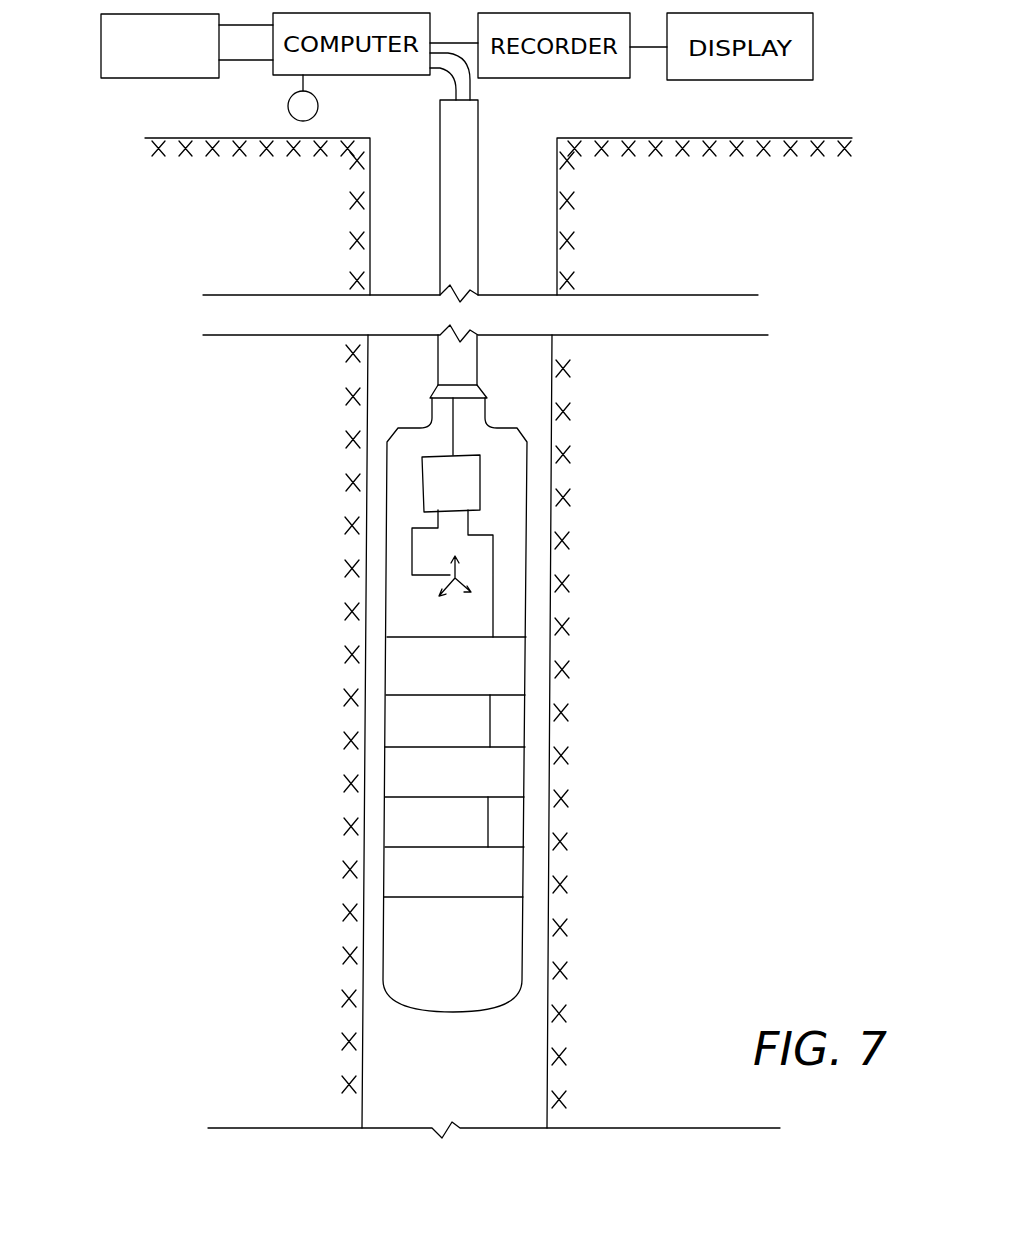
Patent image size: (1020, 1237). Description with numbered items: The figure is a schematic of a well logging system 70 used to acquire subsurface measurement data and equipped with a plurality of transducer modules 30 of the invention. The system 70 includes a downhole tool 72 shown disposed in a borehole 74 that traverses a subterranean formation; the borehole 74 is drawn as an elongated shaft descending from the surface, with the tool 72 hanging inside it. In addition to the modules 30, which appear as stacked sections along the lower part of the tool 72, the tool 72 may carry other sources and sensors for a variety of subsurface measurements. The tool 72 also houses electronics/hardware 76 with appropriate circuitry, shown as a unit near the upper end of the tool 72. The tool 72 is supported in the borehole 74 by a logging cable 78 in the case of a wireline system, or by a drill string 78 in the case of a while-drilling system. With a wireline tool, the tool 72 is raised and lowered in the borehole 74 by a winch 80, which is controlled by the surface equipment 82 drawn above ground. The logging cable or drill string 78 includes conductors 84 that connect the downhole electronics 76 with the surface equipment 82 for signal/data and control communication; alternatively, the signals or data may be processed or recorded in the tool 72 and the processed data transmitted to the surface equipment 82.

The surface equipment 82 is at (100, 42).
The winch 80 is at (318, 100).
The conductors 84 is at (470, 90).
The logging cable 78 is at (437, 128).
The logging system 70 is at (500, 218).
The downhole tool 72 is at (468, 685).
The electronics/hardware 76 is at (452, 546).
The transducer modules 30 is at (512, 672).
The borehole 74 is at (363, 1043).